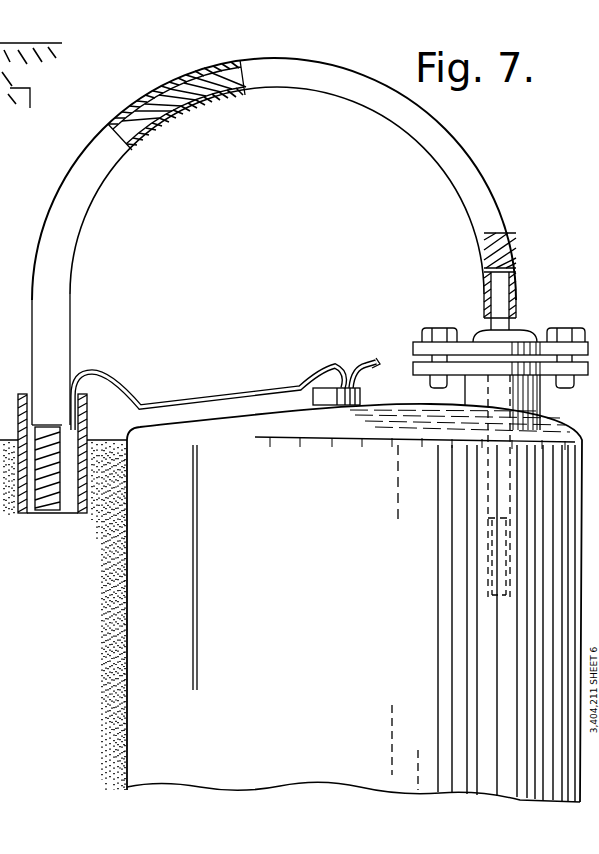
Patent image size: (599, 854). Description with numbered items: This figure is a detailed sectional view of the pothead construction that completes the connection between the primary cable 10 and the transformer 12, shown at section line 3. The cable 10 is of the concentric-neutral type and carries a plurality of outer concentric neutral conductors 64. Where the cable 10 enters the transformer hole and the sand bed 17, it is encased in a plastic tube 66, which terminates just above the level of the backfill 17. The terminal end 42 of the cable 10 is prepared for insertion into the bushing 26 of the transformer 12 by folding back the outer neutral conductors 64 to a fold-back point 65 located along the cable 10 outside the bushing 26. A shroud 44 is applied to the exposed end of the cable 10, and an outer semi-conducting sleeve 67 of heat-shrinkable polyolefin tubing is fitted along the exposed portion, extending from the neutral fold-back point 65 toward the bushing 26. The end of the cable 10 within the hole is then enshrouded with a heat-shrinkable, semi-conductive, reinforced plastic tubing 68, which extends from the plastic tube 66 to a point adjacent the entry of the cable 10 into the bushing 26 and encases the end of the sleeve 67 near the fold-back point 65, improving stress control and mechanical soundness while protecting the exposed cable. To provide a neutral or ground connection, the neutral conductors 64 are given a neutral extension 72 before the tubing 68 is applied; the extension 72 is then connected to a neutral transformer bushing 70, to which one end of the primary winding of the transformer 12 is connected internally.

The section line indicator 3 is at (31, 92).
The cable 10 is at (199, 33).
The transformer 12 is at (116, 627).
The sand bed 17 is at (99, 440).
The bushing 26 is at (543, 335).
The terminal end 42 is at (538, 532).
The shroud 44 is at (490, 581).
The outer concentric neutral conductors 64 is at (205, 92).
The neutral fold-back point 65 is at (517, 268).
The plastic tube 66 is at (93, 492).
The semi-conducting sleeve 67 is at (517, 294).
The reinforced plastic tubing 68 is at (240, 65).
The neutral transformer bushing 70 is at (314, 398).
The neutral extension 72 is at (107, 382).